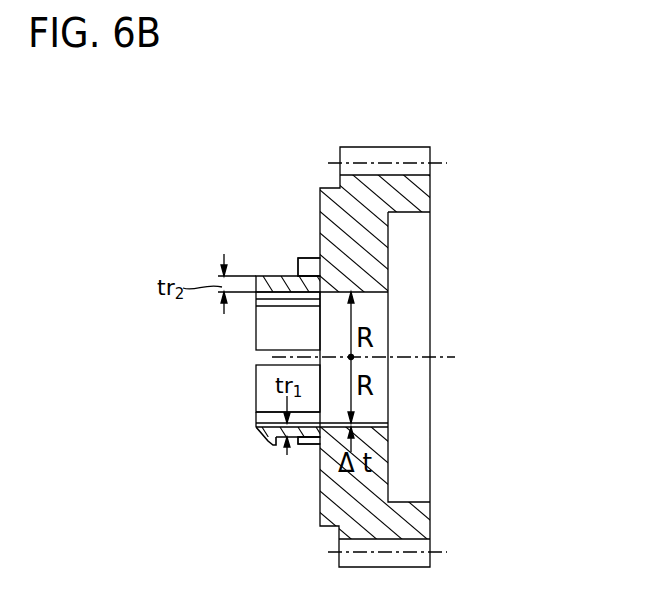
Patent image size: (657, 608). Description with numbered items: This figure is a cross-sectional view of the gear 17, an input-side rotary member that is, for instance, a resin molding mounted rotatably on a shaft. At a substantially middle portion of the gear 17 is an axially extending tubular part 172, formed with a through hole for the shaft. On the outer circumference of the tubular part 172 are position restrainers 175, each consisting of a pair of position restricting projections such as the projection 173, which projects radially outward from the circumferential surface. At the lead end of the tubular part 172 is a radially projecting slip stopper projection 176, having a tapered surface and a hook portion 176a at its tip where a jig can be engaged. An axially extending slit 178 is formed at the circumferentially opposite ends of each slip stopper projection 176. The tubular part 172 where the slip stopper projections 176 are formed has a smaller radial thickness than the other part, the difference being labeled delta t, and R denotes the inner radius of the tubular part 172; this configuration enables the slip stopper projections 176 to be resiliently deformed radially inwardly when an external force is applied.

The gear 17 is at (420, 192).
The tubular part 172 is at (285, 275).
The position restricting projection 173 is at (296, 266).
The position restrainer 175 is at (263, 397).
The slip stopper projection 176 is at (262, 328).
The hook portion 176a is at (262, 437).
The slit 178 is at (272, 357).